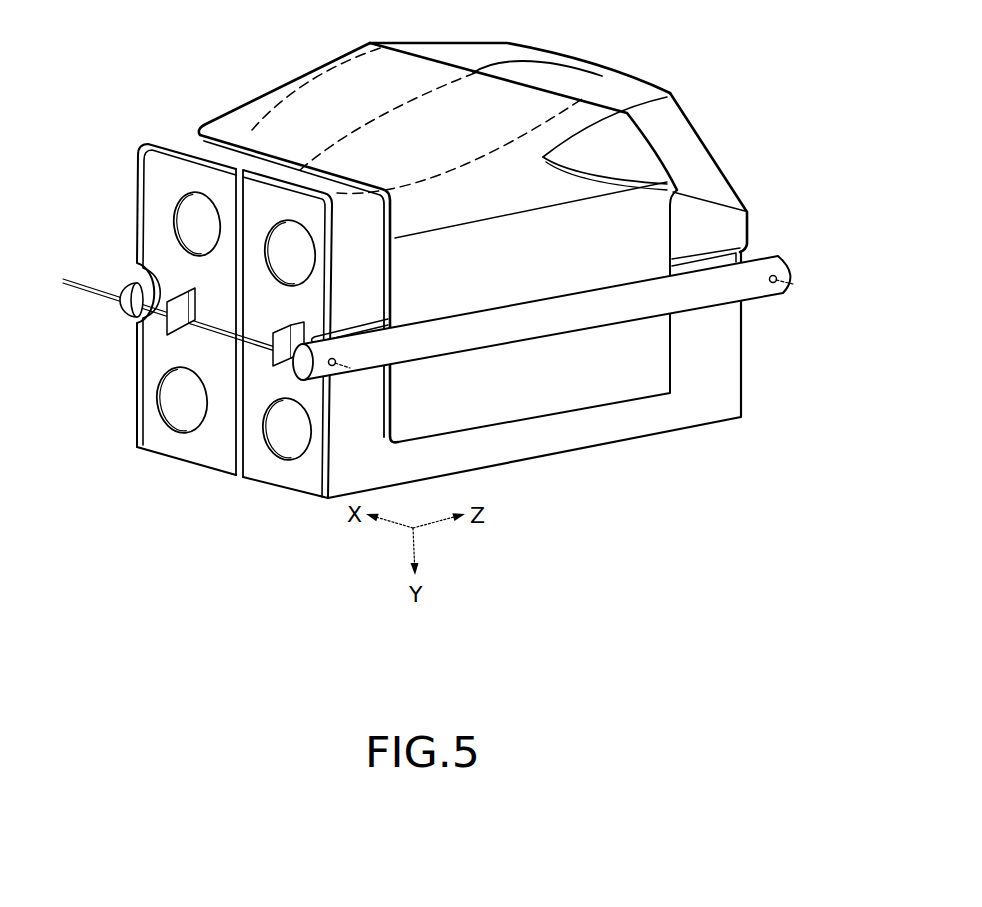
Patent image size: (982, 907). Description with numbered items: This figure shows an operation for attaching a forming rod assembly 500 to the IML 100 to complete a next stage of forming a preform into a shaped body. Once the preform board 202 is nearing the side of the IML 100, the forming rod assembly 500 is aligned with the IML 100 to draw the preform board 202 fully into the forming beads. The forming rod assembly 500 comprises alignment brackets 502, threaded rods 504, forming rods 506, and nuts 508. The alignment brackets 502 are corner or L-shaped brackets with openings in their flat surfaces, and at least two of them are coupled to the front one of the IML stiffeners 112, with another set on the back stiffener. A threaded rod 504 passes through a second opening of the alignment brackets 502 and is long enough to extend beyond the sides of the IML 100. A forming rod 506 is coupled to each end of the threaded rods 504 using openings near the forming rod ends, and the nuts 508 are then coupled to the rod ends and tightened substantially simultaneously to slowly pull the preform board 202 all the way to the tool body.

The IML 100 is at (666, 126).
The preform board 202 is at (640, 164).
The forming rod assembly 500 is at (436, 337).
The alignment brackets 502 is at (273, 362).
The threaded rods 504 is at (213, 328).
The forming rods 506 is at (713, 292).
The nuts 508 is at (337, 362).
The IML stiffeners 112 is at (253, 457).